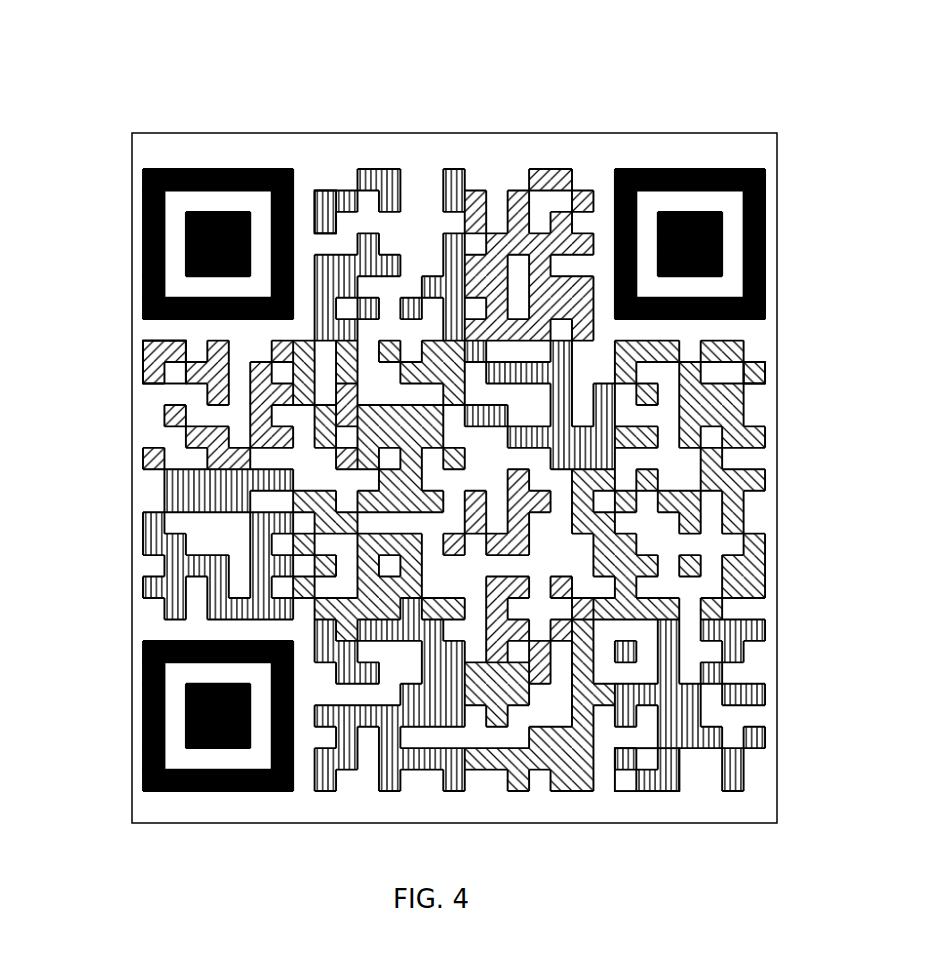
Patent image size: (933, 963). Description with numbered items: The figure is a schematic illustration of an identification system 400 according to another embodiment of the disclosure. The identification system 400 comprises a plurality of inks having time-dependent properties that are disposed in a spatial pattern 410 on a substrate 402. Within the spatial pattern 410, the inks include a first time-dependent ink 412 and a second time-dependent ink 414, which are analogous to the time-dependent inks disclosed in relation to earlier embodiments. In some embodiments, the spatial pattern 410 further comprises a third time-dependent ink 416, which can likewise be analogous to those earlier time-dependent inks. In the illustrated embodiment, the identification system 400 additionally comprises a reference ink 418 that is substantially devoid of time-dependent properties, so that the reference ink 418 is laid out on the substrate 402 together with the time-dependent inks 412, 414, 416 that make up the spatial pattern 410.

The identification system 400 is at (484, 114).
The substrate 402 is at (323, 806).
The spatial pattern 410 is at (620, 802).
The first time-dependent ink 412 is at (147, 387).
The second time-dependent ink 414 is at (341, 190).
The third time-dependent ink 416 is at (768, 364).
The reference ink 418 is at (200, 168).